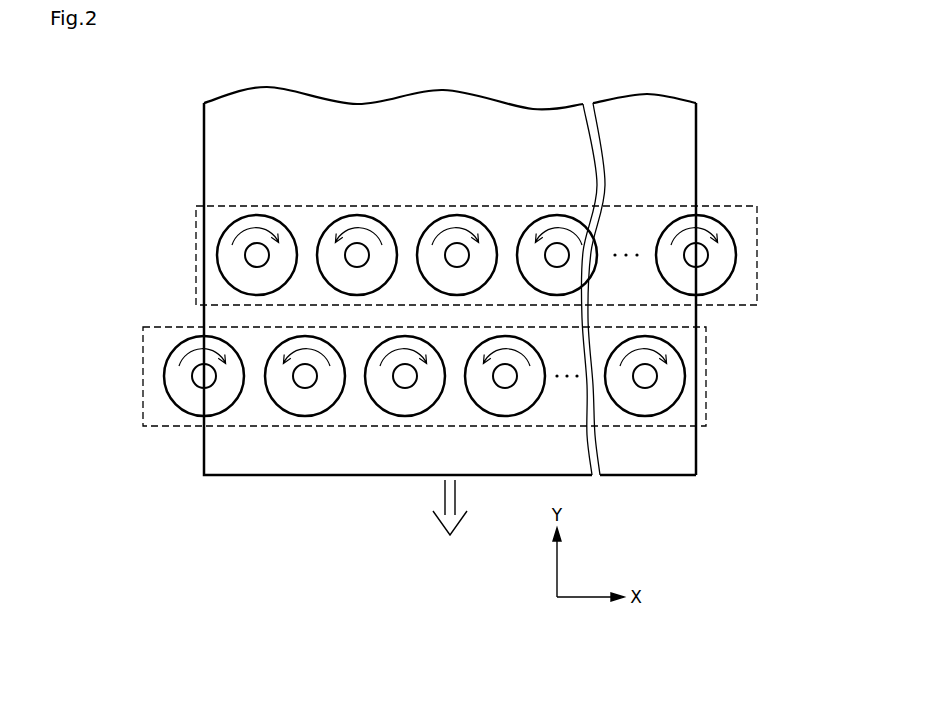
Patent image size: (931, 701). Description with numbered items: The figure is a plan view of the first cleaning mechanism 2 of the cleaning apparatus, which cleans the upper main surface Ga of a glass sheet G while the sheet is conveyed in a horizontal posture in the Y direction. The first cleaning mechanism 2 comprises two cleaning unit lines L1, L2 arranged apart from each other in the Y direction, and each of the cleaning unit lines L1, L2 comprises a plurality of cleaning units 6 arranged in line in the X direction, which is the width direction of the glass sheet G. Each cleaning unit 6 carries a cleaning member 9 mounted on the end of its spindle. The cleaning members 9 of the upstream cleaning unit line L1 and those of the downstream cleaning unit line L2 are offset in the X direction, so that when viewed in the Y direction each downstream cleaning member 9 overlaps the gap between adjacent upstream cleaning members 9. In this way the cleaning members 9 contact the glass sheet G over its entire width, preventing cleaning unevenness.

The first cleaning mechanism 2 is at (485, 307).
The cleaning unit 6 is at (449, 312).
The cleaning member 9 is at (471, 331).
The glass sheet G is at (707, 116).
The main surface Ga is at (683, 140).
The cleaning unit line L1 is at (758, 250).
The cleaning unit line L2 is at (706, 371).